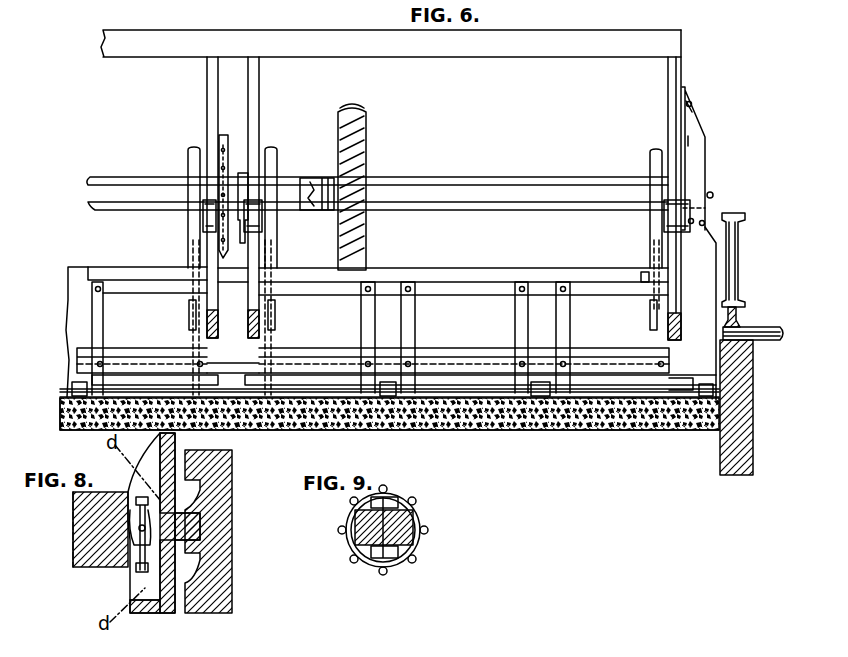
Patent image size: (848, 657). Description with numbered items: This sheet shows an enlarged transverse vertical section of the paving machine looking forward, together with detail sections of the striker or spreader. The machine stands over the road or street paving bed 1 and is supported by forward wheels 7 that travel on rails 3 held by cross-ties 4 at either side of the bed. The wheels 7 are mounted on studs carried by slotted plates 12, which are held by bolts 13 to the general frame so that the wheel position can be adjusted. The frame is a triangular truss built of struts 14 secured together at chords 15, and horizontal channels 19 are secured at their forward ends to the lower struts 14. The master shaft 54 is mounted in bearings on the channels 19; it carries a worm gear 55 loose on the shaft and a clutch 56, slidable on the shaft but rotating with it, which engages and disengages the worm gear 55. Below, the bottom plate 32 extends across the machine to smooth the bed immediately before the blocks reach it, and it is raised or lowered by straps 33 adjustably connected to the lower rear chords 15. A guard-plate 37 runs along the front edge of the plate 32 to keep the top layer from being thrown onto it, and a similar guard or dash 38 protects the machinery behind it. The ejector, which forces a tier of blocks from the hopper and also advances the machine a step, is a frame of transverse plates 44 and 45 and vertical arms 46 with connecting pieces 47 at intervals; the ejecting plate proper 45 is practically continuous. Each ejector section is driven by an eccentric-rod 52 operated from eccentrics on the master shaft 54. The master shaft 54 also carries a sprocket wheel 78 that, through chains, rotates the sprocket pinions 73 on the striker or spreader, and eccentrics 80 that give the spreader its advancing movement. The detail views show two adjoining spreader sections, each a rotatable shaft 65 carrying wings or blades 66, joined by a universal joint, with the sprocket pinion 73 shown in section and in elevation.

In FIG. 6, the road or street paving bed 1 is at (455, 400).
In FIG. 6, the rails 3 is at (738, 318).
In FIG. 6, the cross-ties 4 is at (772, 330).
In FIG. 6, the forward wheels 7 is at (741, 214).
In FIG. 6, the slotted plates 12 is at (698, 166).
In FIG. 6, the bolts 13 is at (690, 140).
In FIG. 6, the struts 14 is at (206, 78).
In FIG. 6, the chords 15 is at (520, 31).
In FIG. 6, the horizontal channels 19 is at (206, 226).
In FIG. 6, the bottom plate 32 is at (300, 400).
In FIG. 6, the straps 33 is at (72, 388).
In FIG. 6, the guard-plate 37 is at (68, 366).
In FIG. 6, the guard or dash 38 is at (68, 278).
In FIG. 6, the transverse plates 44 is at (115, 267).
In FIG. 6, the ejecting plate 45 is at (195, 400).
In FIG. 6, the vertical arms 46 is at (190, 322).
In FIG. 6, the connecting pieces 47 is at (104, 312).
In FIG. 6, the eccentric-rod 52 is at (192, 250).
In FIG. 6, the master shaft 54 is at (96, 190).
In FIG. 6, the worm gear 55 is at (362, 107).
In FIG. 6, the clutch 56 is at (317, 176).
In FIG. 8, the rotatable shafts 65 is at (165, 605).
In FIG. 8, the wings or blades 66 is at (215, 607).
In FIG. 8, the sprocket pinions 73 is at (136, 570).
In FIG. 9, the sprocket pinions 73 is at (418, 525).
In FIG. 6, the sprocket wheel 78 is at (224, 136).
In FIG. 6, the eccentrics 80 is at (246, 173).